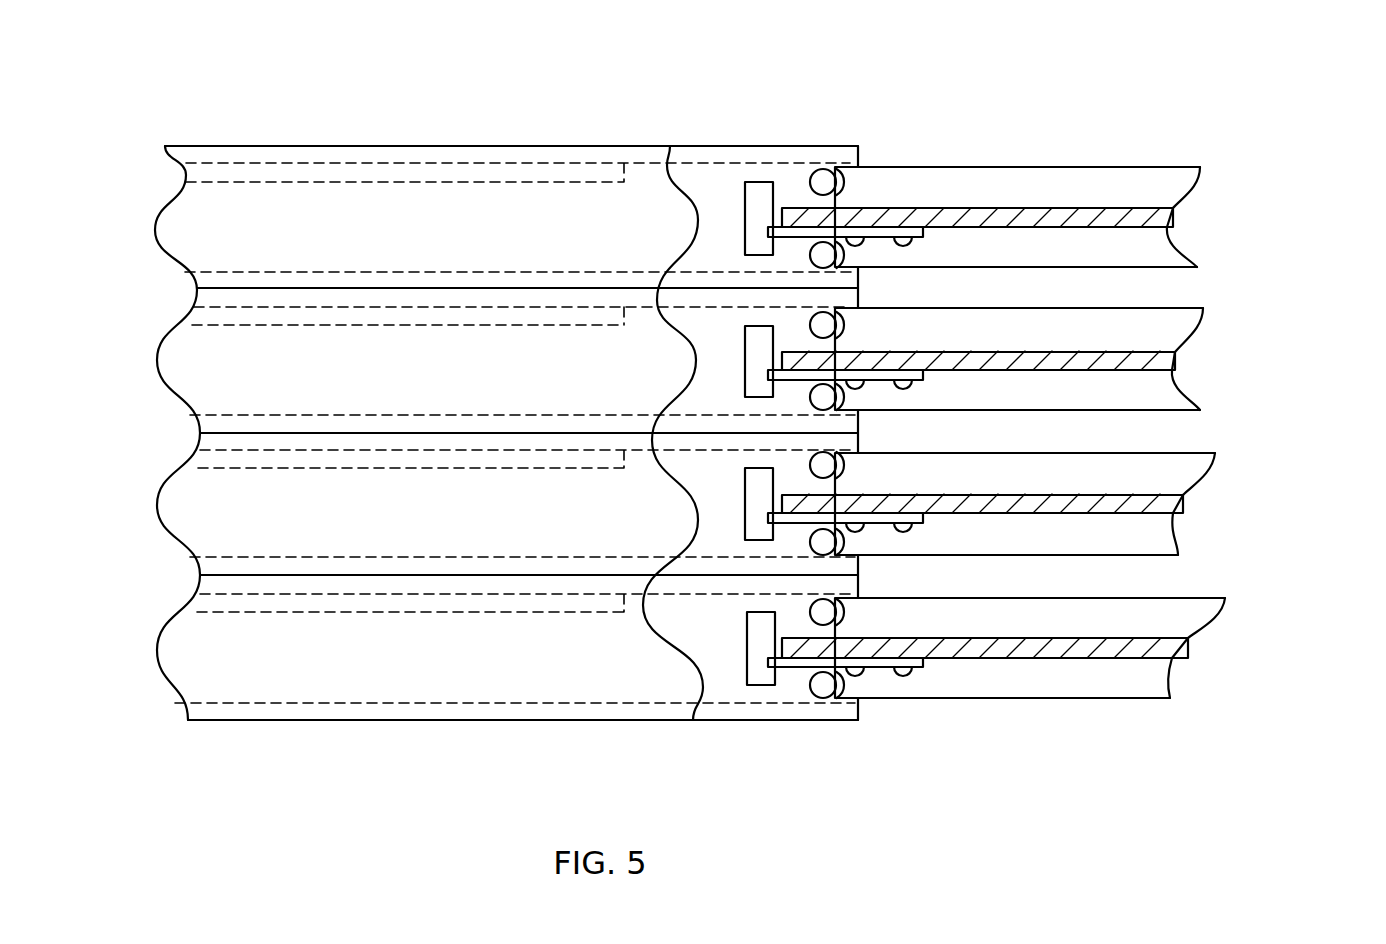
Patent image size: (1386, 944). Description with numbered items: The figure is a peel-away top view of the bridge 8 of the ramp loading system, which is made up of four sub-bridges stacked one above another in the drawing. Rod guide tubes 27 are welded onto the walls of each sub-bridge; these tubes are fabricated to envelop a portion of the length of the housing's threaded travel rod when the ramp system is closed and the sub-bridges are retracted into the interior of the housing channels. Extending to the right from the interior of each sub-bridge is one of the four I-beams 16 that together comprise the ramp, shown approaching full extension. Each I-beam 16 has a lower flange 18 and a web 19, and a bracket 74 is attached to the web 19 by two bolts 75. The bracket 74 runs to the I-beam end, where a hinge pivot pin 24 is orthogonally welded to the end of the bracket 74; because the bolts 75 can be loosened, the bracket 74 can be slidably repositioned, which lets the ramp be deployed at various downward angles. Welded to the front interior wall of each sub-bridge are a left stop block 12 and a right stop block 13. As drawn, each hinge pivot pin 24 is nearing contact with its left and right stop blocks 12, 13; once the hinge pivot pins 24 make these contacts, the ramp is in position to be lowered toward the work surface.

The bridge 8 is at (463, 122).
The left stop block 12 is at (812, 248).
The right stop block 13 is at (838, 168).
The I-beam 16 is at (1056, 146).
The lower flange 18 is at (1151, 166).
The web 19 is at (1168, 222).
The hinge pivot pin 24 is at (760, 182).
The rod guide tube 27 is at (186, 170).
The bracket 74 is at (928, 232).
The bolts 75 is at (903, 676).